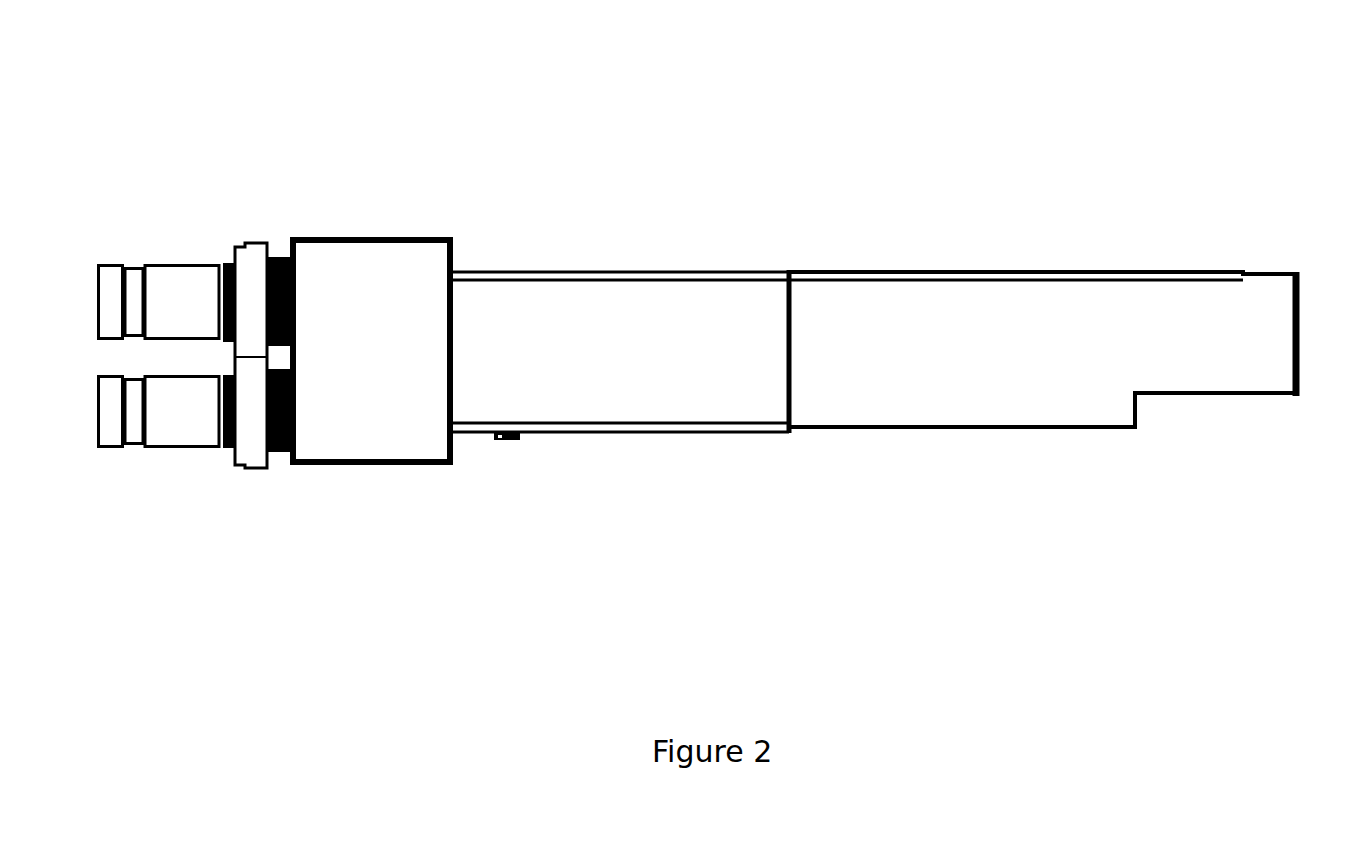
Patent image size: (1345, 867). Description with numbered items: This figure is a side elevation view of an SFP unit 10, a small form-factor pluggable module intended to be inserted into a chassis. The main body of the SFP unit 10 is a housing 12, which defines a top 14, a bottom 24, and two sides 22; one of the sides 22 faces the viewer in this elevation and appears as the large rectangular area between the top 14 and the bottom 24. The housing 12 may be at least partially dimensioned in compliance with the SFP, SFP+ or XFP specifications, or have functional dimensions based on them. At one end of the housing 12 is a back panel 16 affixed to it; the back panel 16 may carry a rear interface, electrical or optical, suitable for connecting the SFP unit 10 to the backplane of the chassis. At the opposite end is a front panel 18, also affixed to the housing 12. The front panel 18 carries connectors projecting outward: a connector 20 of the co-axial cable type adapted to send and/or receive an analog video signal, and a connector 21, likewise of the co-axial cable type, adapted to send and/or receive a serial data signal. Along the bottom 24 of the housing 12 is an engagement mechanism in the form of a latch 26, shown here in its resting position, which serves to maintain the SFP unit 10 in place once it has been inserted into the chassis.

The SFP unit 10 is at (1042, 66).
The housing 12 is at (953, 340).
The top 14 is at (754, 268).
The back panel 16 is at (1302, 302).
The front panel 18 is at (292, 243).
The connector 20 is at (190, 320).
The connector 21 is at (198, 425).
The sides 22 is at (691, 368).
The bottom 24 is at (695, 435).
The latch 26 is at (506, 440).